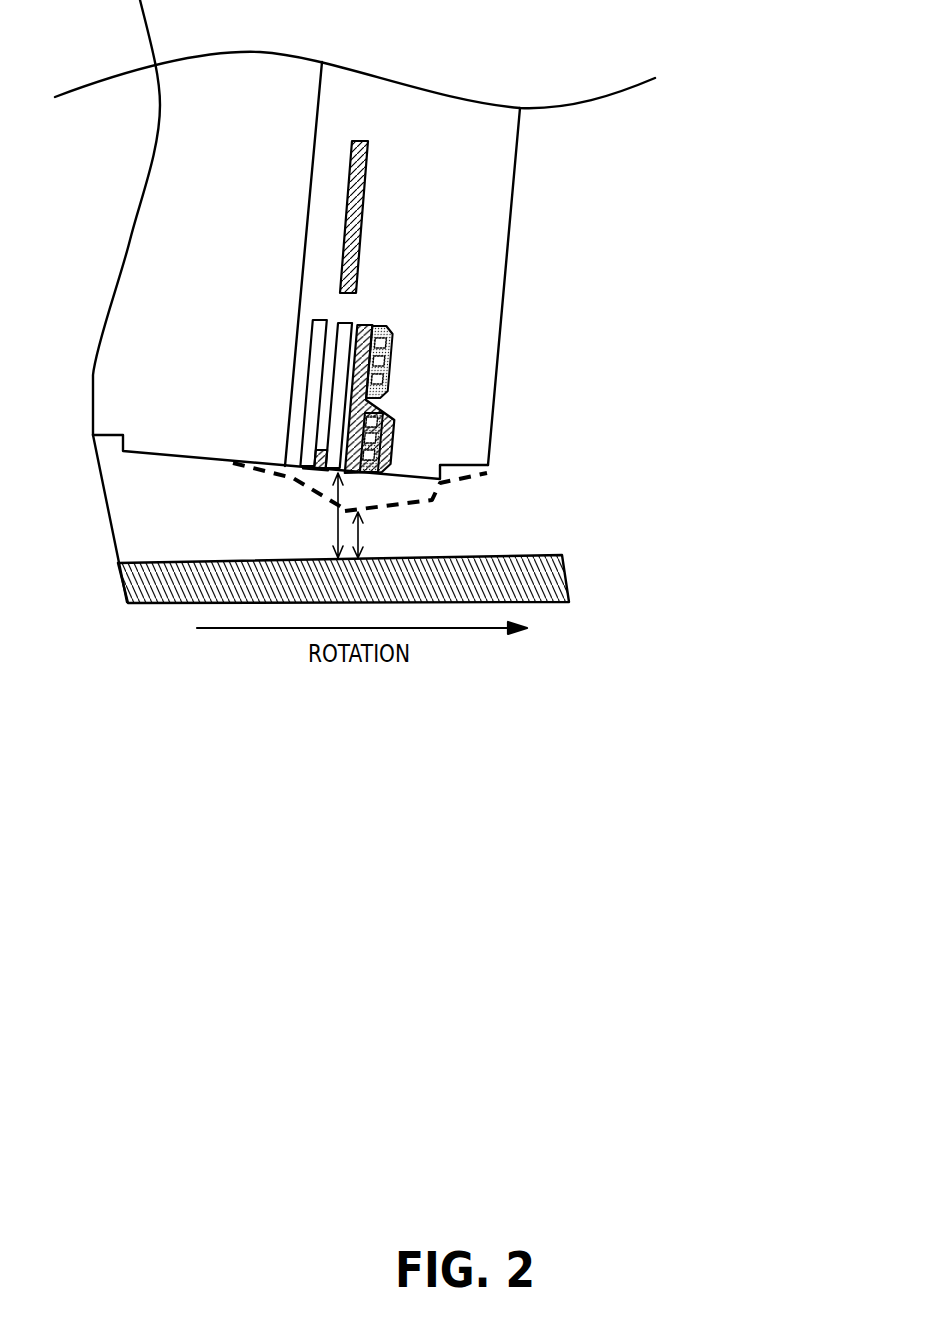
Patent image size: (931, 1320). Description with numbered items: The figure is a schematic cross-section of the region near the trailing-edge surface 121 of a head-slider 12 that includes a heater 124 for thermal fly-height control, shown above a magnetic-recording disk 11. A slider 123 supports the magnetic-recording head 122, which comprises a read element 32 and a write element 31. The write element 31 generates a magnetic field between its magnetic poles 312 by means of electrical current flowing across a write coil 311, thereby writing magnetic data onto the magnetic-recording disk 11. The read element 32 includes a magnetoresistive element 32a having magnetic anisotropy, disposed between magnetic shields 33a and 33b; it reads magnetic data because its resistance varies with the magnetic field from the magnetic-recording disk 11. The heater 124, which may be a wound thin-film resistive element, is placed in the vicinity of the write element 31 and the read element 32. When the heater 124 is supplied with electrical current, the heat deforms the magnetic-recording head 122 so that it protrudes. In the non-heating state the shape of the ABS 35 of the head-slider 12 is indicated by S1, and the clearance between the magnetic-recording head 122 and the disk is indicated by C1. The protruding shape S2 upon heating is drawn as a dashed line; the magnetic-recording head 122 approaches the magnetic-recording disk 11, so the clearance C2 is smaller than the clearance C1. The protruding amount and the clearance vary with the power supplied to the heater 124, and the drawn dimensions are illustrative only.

The magnetic-recording disk 11 is at (549, 555).
The head-slider 12 is at (385, 45).
The trailing-edge surface 121 is at (513, 182).
The magnetic-recording head 122 is at (551, 282).
The slider 123 is at (96, 438).
The heater 124 is at (360, 227).
The write element 31 is at (487, 399).
The write coil 311 is at (390, 337).
The magnetic poles 312 is at (392, 440).
The read element 32 is at (305, 486).
The magnetoresistive element 32a is at (319, 483).
The magnetic shield 33a is at (345, 322).
The magnetic shield 33b is at (316, 340).
The ABS 35 is at (153, 454).
The non-heating ABS shape S1 is at (275, 473).
The protruding shape S2 is at (417, 500).
The clearance in non-heating C1 is at (325, 515).
The clearance upon heating C2 is at (375, 535).